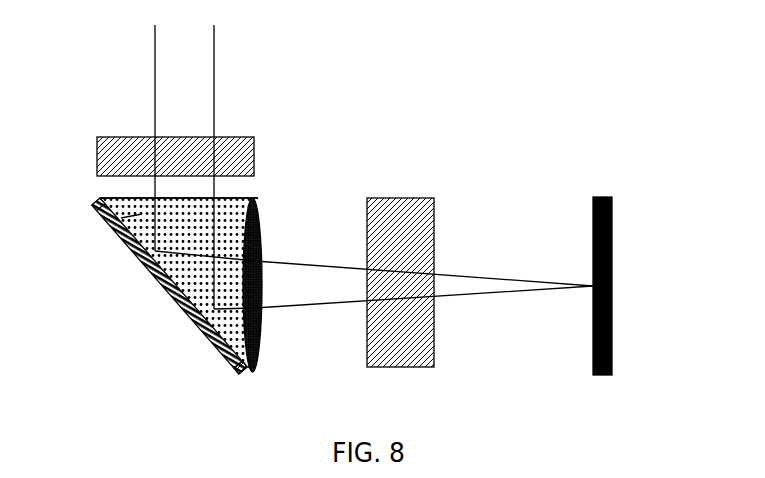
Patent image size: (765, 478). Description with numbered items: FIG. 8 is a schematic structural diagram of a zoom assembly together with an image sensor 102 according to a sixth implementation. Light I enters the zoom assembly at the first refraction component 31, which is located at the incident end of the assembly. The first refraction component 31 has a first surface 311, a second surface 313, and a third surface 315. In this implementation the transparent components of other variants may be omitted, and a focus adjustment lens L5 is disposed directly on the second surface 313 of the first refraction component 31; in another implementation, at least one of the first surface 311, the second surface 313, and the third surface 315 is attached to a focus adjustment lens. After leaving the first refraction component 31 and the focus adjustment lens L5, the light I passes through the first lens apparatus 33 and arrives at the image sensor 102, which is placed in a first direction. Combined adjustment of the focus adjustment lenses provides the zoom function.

The light I is at (214, 97).
The first refraction component 31 is at (121, 235).
The first surface 311 is at (118, 198).
The second surface 313 is at (231, 362).
The third surface 315 is at (138, 256).
The focus adjustment lens L5 is at (260, 343).
The first lens apparatus 33 is at (394, 222).
The image sensor 102 is at (612, 250).